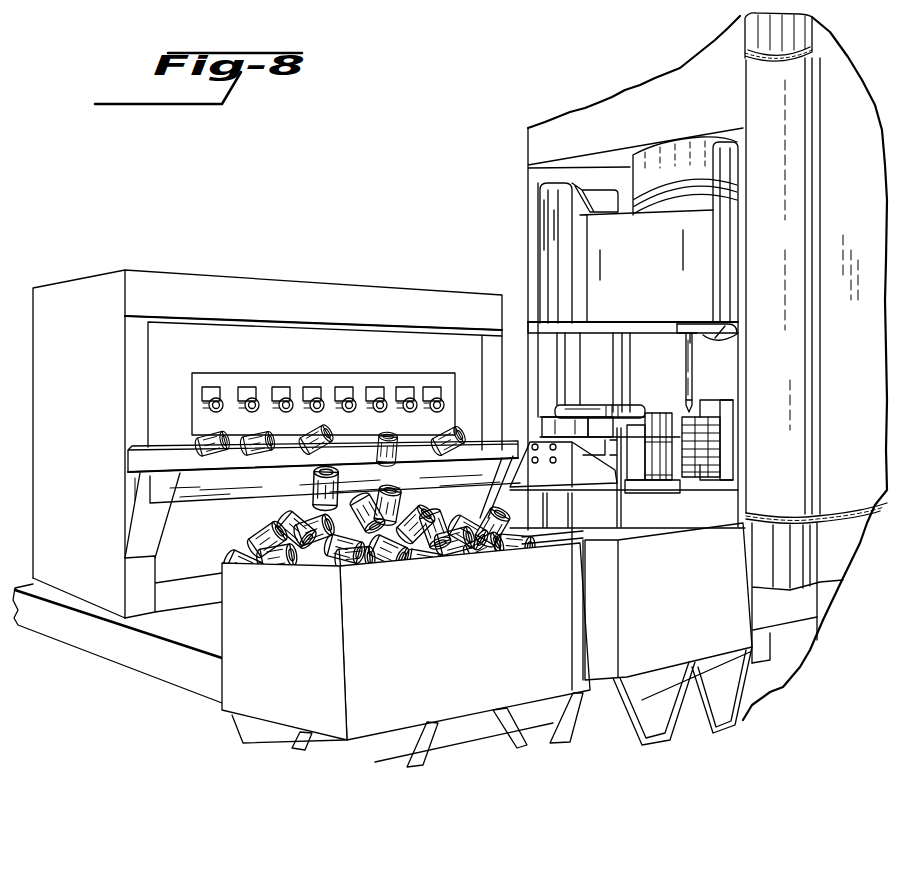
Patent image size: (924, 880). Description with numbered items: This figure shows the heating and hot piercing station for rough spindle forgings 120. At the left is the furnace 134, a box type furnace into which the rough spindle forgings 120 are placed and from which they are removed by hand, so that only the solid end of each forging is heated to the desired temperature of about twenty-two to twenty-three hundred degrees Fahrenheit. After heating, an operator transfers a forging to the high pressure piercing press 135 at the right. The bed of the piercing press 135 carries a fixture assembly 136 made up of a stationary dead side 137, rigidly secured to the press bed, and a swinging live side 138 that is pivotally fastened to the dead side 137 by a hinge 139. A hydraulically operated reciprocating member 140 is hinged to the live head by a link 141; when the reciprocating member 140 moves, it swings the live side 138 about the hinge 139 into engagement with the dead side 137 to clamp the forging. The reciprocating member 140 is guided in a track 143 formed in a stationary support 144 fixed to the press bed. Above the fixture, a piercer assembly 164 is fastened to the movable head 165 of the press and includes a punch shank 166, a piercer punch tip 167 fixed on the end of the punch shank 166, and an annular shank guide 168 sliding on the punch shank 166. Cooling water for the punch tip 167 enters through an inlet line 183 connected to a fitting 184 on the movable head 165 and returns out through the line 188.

The rough spindle forgings 120 is at (340, 386).
The furnace 134 is at (230, 301).
The high pressure piercing press 135 is at (506, 204).
The fixture assembly 136 is at (703, 402).
The stationary dead side 137 is at (718, 440).
The swinging live side 138 is at (650, 482).
The hinge 139 is at (672, 440).
The hydraulically operated reciprocating member 140 is at (608, 405).
The link 141 is at (632, 480).
The track 143 is at (573, 412).
The stationary support 144 is at (580, 408).
The piercer assembly 164 is at (684, 354).
The movable head 165 is at (672, 281).
The punch shank 166 is at (684, 372).
The piercer punch tip 167 is at (684, 404).
The annular shank guide 168 is at (684, 393).
The inlet line 183 is at (735, 338).
The fitting 184 is at (700, 318).
The line 188 is at (693, 343).